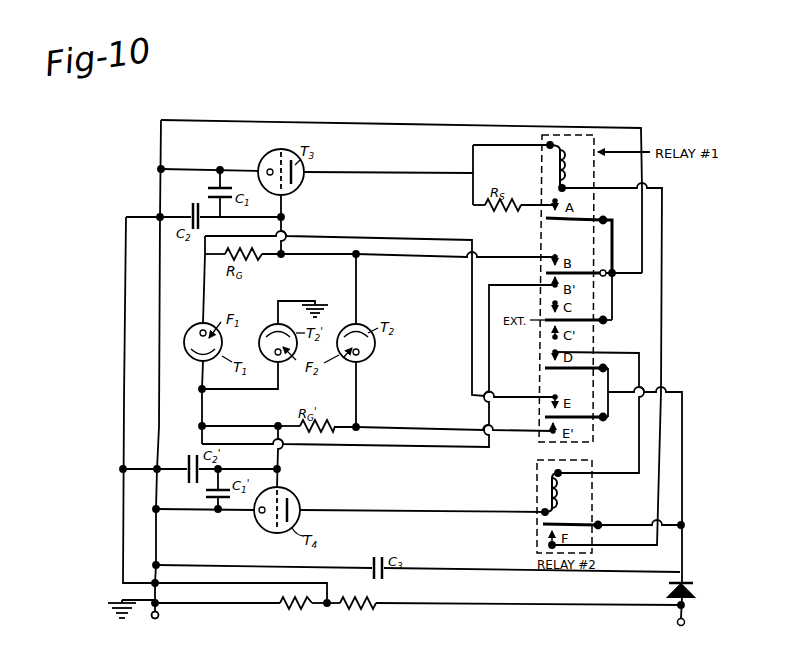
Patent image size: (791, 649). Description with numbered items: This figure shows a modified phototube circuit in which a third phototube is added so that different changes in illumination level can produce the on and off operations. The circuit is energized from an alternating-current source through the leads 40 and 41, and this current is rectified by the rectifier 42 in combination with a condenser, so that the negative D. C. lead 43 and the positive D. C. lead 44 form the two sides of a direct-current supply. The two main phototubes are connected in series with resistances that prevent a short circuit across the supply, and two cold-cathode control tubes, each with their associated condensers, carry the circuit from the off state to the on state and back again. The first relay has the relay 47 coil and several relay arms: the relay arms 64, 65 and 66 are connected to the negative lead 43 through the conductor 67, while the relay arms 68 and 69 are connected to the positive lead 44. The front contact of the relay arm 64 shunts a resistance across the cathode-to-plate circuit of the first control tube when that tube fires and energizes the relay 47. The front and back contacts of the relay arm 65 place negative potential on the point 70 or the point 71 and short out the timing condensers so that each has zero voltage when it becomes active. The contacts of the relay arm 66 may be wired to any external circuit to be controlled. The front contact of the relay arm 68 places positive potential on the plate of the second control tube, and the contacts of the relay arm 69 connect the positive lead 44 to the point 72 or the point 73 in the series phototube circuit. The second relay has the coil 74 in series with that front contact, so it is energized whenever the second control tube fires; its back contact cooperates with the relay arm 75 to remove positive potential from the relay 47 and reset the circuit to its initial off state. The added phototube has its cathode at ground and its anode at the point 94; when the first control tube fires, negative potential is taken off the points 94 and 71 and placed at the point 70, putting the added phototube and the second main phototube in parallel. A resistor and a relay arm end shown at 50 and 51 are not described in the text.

The lead 40 is at (160, 608).
The lead 41 is at (685, 616).
The rectifier 42 is at (692, 592).
The negative D. C. lead 43 is at (159, 427).
The positive D. C. lead 44 is at (682, 490).
The relay 47 is at (549, 162).
The resistor 50 is at (365, 613).
The relay contact arm 51 is at (546, 218).
The relay arm 64 is at (558, 226).
The relay arm 65 is at (594, 272).
The relay arm 66 is at (588, 322).
The conductor 67 is at (350, 124).
The relay arm 68 is at (564, 371).
The relay arm 69 is at (588, 419).
The point 70 is at (358, 256).
The point 71 is at (204, 426).
The point 72 is at (205, 254).
The point 73 is at (358, 426).
The coil 74 is at (545, 492).
The relay arm 75 is at (585, 523).
The point 94 is at (205, 391).